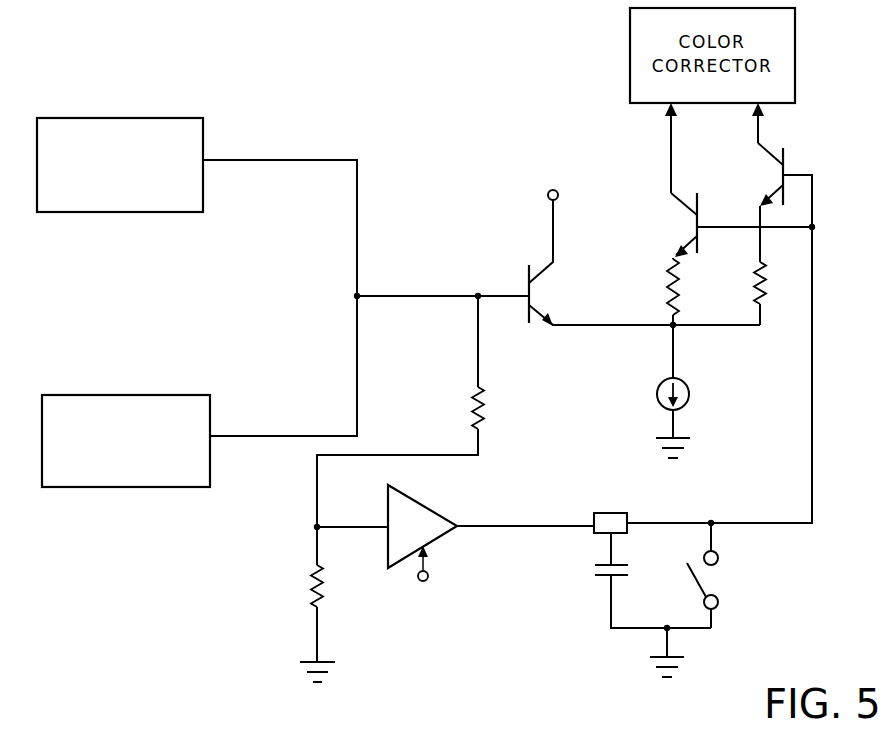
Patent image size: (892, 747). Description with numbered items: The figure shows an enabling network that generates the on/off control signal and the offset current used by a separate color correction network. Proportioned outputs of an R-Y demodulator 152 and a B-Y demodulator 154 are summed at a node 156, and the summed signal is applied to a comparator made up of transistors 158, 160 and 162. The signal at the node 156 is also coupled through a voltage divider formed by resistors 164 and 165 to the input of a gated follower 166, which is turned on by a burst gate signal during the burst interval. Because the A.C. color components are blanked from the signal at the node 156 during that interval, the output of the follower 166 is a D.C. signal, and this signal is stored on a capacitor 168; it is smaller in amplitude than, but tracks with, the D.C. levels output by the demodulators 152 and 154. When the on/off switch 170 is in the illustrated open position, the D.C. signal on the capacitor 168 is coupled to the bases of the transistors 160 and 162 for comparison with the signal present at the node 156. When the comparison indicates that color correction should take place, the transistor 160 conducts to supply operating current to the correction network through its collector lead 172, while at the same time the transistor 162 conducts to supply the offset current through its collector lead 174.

The R-Y demodulator 152 is at (140, 212).
The B-Y demodulator 154 is at (142, 487).
The node 156 is at (478, 294).
The transistor 158 is at (537, 294).
The transistor 160 is at (695, 226).
The transistor 162 is at (776, 175).
The resistor 164 is at (485, 405).
The resistor 165 is at (312, 588).
The gated follower 166 is at (432, 508).
The capacitor 168 is at (599, 564).
The on/off switch 170 is at (700, 578).
The collector lead 172 is at (669, 173).
The collector lead 174 is at (758, 145).